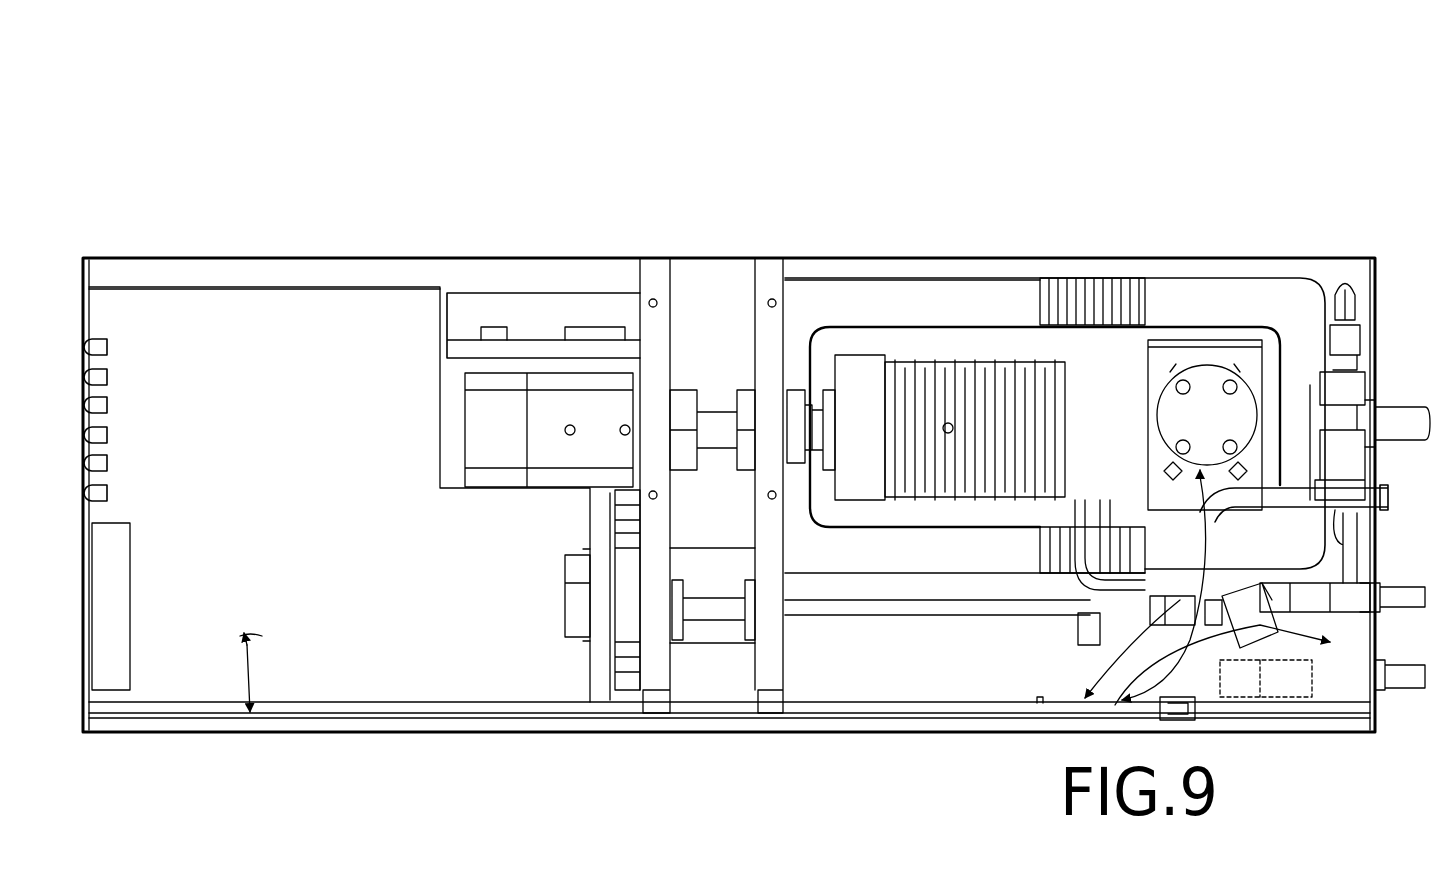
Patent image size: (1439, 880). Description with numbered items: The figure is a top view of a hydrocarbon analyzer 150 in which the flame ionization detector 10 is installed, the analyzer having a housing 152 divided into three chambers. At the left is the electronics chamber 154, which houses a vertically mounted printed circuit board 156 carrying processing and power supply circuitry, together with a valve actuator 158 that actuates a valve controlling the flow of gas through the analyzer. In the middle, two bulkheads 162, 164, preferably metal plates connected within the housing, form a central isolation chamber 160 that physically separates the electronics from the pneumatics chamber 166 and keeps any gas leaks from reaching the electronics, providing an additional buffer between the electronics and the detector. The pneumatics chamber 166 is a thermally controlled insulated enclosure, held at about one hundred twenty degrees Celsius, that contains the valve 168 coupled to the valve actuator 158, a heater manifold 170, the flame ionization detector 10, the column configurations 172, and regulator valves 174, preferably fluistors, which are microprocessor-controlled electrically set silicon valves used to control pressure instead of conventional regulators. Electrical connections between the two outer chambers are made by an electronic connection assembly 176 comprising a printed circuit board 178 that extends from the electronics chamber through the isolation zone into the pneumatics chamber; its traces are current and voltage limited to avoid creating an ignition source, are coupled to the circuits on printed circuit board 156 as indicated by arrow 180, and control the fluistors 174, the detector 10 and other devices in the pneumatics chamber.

The flame ionization detector 10 is at (1246, 334).
The hydrocarbon analyzer 150 is at (945, 126).
The housing 152 is at (722, 254).
The electronics chamber 154 is at (380, 282).
The printed circuit board 156 is at (292, 300).
The valve actuator 158 is at (588, 400).
The central isolation chamber 160 is at (742, 270).
The bulkhead 162 is at (655, 282).
The bulkhead 164 is at (778, 277).
The pneumatics chamber 166 is at (1032, 268).
The valve 168 is at (828, 500).
The heater manifold 170 is at (1040, 360).
The column configurations 172 is at (1070, 387).
The regulator valves 174 is at (1350, 683).
The electronic connection assembly 176 is at (905, 716).
The printed circuit board 178 is at (543, 716).
The arrow 180 is at (249, 668).